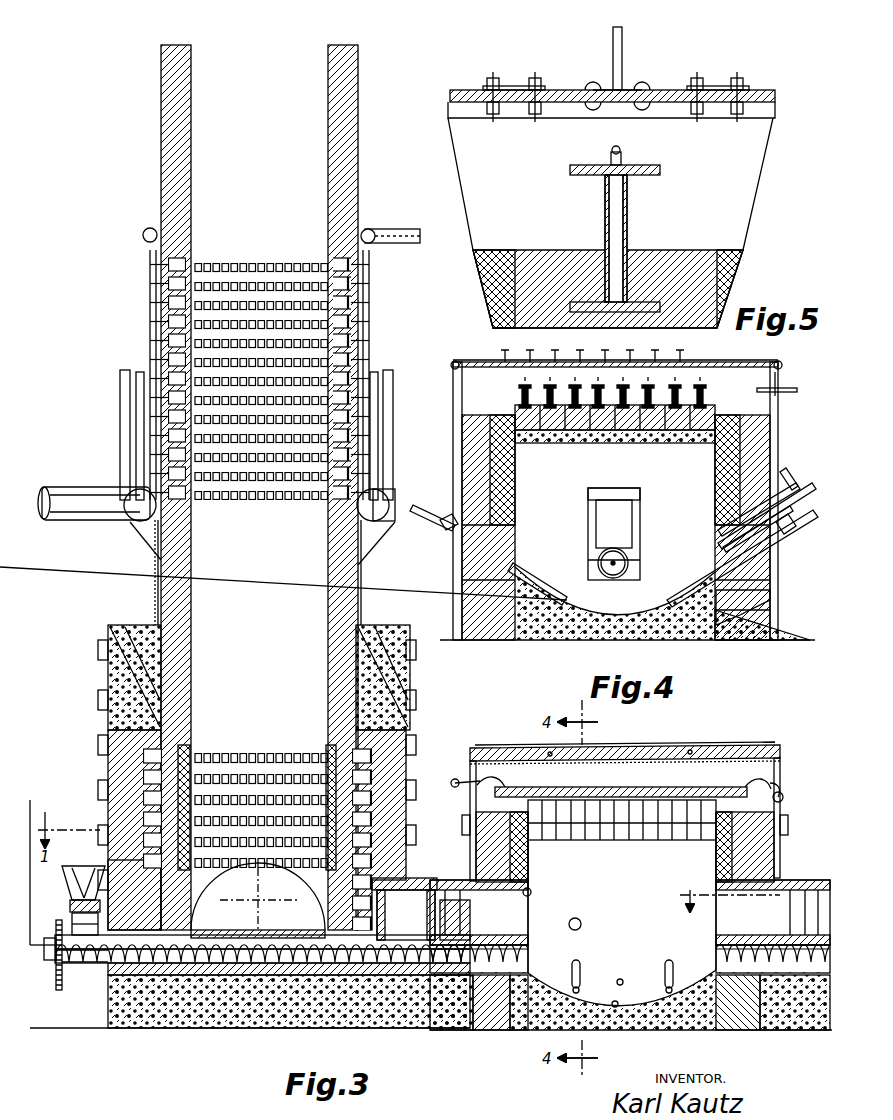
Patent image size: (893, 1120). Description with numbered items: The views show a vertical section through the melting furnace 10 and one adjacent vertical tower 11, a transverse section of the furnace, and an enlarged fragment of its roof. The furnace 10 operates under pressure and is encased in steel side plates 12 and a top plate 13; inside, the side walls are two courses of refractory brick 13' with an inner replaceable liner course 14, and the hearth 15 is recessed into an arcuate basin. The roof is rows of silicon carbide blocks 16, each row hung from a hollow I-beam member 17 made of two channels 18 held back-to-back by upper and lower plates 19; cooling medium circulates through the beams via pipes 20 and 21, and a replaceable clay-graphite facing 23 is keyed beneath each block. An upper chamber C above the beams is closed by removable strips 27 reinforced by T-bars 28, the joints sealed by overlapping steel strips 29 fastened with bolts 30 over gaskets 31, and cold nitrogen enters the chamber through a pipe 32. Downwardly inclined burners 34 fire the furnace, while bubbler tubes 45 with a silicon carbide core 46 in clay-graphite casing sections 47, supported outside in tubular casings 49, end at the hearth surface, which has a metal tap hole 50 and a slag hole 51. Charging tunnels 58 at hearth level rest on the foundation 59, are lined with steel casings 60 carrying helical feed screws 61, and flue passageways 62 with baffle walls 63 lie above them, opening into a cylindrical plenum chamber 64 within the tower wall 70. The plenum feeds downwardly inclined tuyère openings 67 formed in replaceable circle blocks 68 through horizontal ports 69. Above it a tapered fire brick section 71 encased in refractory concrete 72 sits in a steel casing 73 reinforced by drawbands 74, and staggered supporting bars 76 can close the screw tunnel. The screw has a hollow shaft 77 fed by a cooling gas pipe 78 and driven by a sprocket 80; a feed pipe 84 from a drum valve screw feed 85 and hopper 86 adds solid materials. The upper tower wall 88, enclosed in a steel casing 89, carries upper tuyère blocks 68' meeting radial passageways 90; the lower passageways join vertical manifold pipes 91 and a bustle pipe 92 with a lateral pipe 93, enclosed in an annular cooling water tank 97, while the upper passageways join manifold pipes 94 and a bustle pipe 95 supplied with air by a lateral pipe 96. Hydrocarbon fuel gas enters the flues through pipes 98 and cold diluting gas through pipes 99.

In FIG. 3, the melting furnace 10 is at (776, 848).
In FIG. 4, the melting furnace 10 is at (460, 440).
In FIG. 3, the vertical tower 11 is at (158, 139).
In FIG. 3, the side plates 12 is at (472, 800).
In FIG. 4, the side plates 12 is at (456, 392).
In FIG. 4, the top plate 13 is at (615, 352).
In FIG. 5, the top plate 13 is at (611, 215).
In FIG. 3, the courses of refractory brick 13' is at (479, 847).
In FIG. 3, the inner replaceable course 14 is at (528, 860).
In FIG. 3, the hearth 15 is at (596, 1002).
In FIG. 4, the hearth 15 is at (600, 612).
In FIG. 3, the silicon carbide blocks 16 is at (640, 810).
In FIG. 4, the silicon carbide blocks 16 is at (572, 440).
In FIG. 5, the silicon carbide blocks 16 is at (696, 262).
In FIG. 3, the I-beam steel member 17 is at (574, 788).
In FIG. 4, the I-beam steel member 17 is at (560, 392).
In FIG. 5, the I-beam steel member 17 is at (634, 220).
In FIG. 5, the channels 18 is at (605, 206).
In FIG. 4, the upper and lower plates 19 is at (660, 360).
In FIG. 5, the upper and lower plates 19 is at (634, 168).
In FIG. 3, the pipe 20 is at (756, 776).
In FIG. 3, the pipe 21 is at (490, 776).
In FIG. 5, the pipe 21 is at (610, 150).
In FIG. 3, the facing 23 is at (640, 832).
In FIG. 4, the facing 23 is at (630, 442).
In FIG. 3, the removable metal strips 27 is at (664, 752).
In FIG. 5, the removable metal strips 27 is at (456, 90).
In FIG. 3, the T-bar 28 is at (622, 752).
In FIG. 4, the T-bar 28 is at (700, 360).
In FIG. 5, the T-bar 28 is at (612, 52).
In FIG. 5, the overlapping steel strips 29 is at (496, 78).
In FIG. 5, the bolts 30 is at (492, 114).
In FIG. 5, the gaskets 31 is at (512, 92).
In FIG. 4, the pipe 32 is at (784, 388).
In FIG. 3, the burner 34 is at (580, 920).
In FIG. 4, the burner 34 is at (786, 476).
In FIG. 4, the bubbler tubes 45 is at (438, 524).
In FIG. 4, the inside core 46 is at (425, 508).
In FIG. 3, the outer casing sections 47 is at (570, 975).
In FIG. 4, the outer casing sections 47 is at (530, 570).
In FIG. 4, the tubular casing sections 49 is at (782, 553).
In FIG. 3, the metal tap hole 50 is at (618, 1000).
In FIG. 4, the metal tap hole 50 is at (715, 640).
In FIG. 3, the slag hole 51 is at (622, 978).
In FIG. 4, the slag hole 51 is at (732, 598).
In FIG. 3, the charging tunnels 58 is at (528, 932).
In FIG. 3, the foundation 59 is at (231, 1029).
In FIG. 3, the tubular steel casings 60 is at (470, 936).
In FIG. 3, the helical feed screws 61 is at (262, 944).
In FIG. 3, the flue passageways 62 is at (490, 936).
In FIG. 3, the baffle walls 63 is at (455, 917).
In FIG. 3, the cylindrical plenum chamber 64 is at (372, 760).
In FIG. 3, the tuyère openings 67 is at (250, 757).
In FIG. 3, the circle block 68 is at (257, 816).
In FIG. 3, the tuyère blocks 68' is at (261, 376).
In FIG. 3, the horizontal ports 69 is at (178, 742).
In FIG. 3, the tower wall 70 is at (116, 866).
In FIG. 3, the inwardly tapered section 71 is at (110, 637).
In FIG. 3, the refractory concrete 72 is at (125, 625).
In FIG. 3, the steel casing 73 is at (108, 762).
In FIG. 3, the drawbands 74 is at (98, 697).
In FIG. 3, the supporting bars 76 is at (258, 932).
In FIG. 3, the hollow shaft 77 is at (46, 952).
In FIG. 3, the pipe 78 is at (30, 890).
In FIG. 3, the sprocket 80 is at (59, 978).
In FIG. 3, the feed pipe 84 is at (85, 924).
In FIG. 3, the drum valve screw feed 85 is at (70, 906).
In FIG. 3, the hopper 86 is at (83, 883).
In FIG. 3, the cylindrical tower wall 88 is at (186, 560).
In FIG. 3, the steel casing 89 is at (157, 575).
In FIG. 3, the radial passageways 90 is at (180, 258).
In FIG. 3, the vertical manifold pipes 91 is at (138, 410).
In FIG. 3, the bustle pipe 92 is at (138, 522).
In FIG. 3, the laterally extending pipe 93 is at (72, 492).
In FIG. 3, the vertical manifold pipes 94 is at (148, 302).
In FIG. 3, the bustle pipe 95 is at (143, 235).
In FIG. 3, the lateral pipe 96 is at (392, 230).
In FIG. 3, the annular tank 97 is at (120, 376).
In FIG. 3, the pipes 98 is at (531, 893).
In FIG. 3, the pipes 99 is at (406, 915).
In FIG. 4, the upper chamber C is at (482, 376).